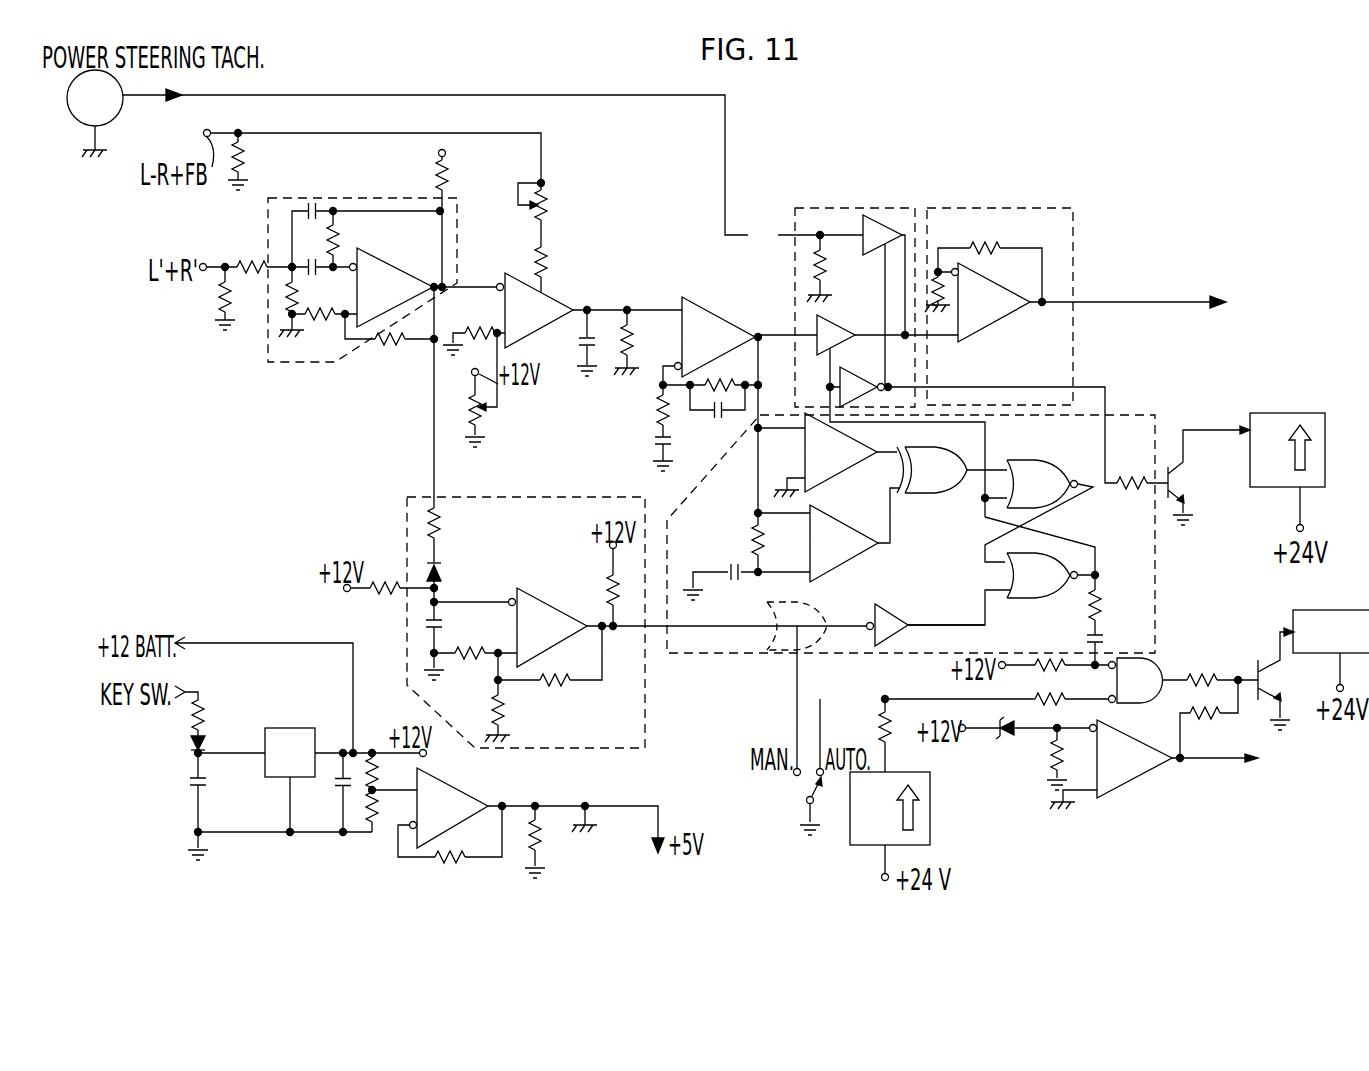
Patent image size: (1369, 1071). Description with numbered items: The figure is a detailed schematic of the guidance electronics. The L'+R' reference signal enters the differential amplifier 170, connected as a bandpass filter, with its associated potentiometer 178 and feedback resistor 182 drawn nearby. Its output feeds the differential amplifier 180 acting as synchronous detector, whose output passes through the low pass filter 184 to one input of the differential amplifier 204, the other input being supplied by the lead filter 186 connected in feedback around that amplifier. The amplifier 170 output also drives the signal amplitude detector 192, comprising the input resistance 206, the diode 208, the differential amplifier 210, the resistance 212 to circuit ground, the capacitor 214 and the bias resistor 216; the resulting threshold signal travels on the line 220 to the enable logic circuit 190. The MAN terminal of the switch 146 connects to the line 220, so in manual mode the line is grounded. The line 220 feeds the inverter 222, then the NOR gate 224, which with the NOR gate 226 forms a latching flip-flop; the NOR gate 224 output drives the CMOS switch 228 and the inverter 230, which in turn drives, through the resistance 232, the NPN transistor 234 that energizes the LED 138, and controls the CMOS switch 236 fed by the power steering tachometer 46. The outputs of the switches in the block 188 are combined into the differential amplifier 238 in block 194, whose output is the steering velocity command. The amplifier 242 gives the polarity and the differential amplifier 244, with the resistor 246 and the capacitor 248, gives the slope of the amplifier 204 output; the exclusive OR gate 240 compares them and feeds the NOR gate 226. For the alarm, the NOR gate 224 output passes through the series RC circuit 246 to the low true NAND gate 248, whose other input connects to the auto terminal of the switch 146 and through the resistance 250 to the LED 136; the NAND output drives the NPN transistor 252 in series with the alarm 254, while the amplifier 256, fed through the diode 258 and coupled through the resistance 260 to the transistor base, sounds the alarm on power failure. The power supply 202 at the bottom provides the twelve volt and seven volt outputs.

The power steering tachometer 46 is at (122, 108).
The LED 136 is at (925, 780).
The LED 138 is at (1325, 461).
The single pole double throw switch 146 is at (805, 790).
The differential amplifier 170 is at (374, 196).
The potentiometer 178 is at (549, 203).
The differential amplifier 180 is at (535, 310).
The feedback resistor 182 is at (390, 348).
The low pass 5 Hz filter 184 is at (598, 378).
The lead filter 186 is at (706, 416).
The comparator circuit 188 is at (824, 208).
The enable logic circuit 190 is at (1150, 414).
The signal amplitude detector 192 is at (560, 498).
The output amplifier circuit 194 is at (1042, 208).
The power supply 202 is at (290, 723).
The differential amplifier 204 is at (715, 337).
The input resistance 206 is at (447, 514).
The diode 208 is at (447, 565).
The differential amplifier 210 is at (548, 627).
The resistance 212 is at (488, 671).
The capacitor 214 is at (444, 626).
The resistor 216 is at (387, 601).
The line 220 is at (652, 630).
The inverter 222 is at (916, 610).
The NOR gate 224 is at (1042, 575).
The NOR gate 226 is at (1042, 484).
The CMOS switch 228 is at (832, 330).
The inverter 230 is at (872, 381).
The resistance 232 is at (1117, 478).
The NPN transistor 234 is at (1184, 485).
The CMOS switch 236 is at (887, 224).
The differential amplifier 238 is at (991, 302).
The exclusive OR gate 240 is at (932, 470).
The amplifier 242 is at (841, 452).
The differential amplifier 244 is at (844, 543).
The resistor 246 is at (756, 538).
The capacitor 248 is at (724, 568).
The resistance 250 is at (878, 726).
The NPN transistor 252 is at (1256, 662).
The alarm 254 is at (1355, 610).
The amplifier 256 is at (1131, 759).
The diode 258 is at (1005, 736).
The resistance 260 is at (1222, 716).